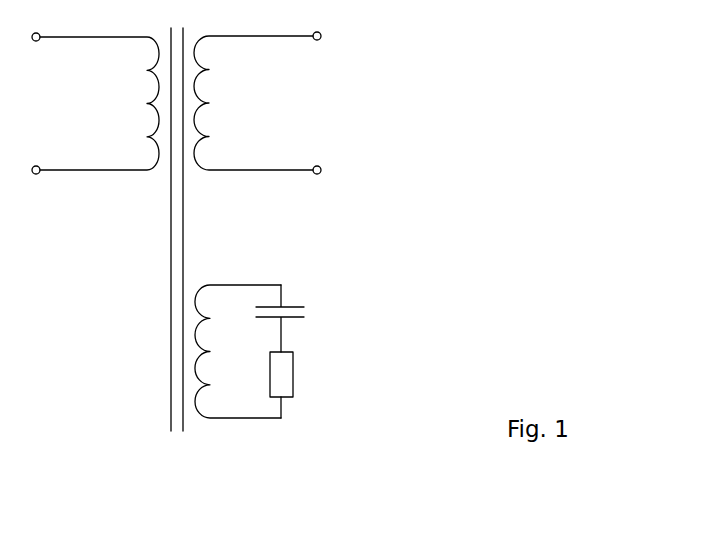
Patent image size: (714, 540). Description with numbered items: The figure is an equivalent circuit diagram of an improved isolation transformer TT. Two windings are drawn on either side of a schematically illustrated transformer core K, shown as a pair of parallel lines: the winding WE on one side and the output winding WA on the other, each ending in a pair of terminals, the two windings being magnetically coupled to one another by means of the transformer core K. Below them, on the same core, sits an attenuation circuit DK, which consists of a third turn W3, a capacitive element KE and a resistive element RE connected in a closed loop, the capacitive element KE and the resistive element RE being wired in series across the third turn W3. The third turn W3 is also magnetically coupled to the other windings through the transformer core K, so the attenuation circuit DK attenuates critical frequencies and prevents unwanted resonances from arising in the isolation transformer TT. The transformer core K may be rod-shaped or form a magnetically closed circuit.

The isolation transformer TT is at (528, 64).
The transformer core K is at (171, 257).
The output winding WA is at (146, 92).
The secondary winding WE is at (212, 92).
The third turn W3 is at (204, 419).
The attenuation circuit DK is at (424, 319).
The capacitive element KE is at (293, 306).
The resistive element RE is at (293, 372).